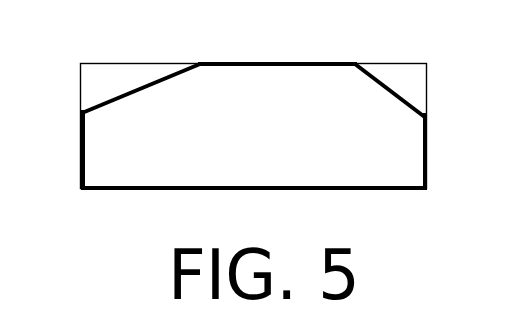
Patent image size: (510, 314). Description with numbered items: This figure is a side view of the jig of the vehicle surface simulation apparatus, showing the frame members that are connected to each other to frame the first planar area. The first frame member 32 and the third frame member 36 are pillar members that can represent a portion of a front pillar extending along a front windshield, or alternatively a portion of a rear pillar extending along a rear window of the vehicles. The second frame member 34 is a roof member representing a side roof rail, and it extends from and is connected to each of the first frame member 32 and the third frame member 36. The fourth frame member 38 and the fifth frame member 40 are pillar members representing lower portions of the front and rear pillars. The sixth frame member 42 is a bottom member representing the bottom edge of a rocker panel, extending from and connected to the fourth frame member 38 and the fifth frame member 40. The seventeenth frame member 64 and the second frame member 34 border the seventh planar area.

The first frame member 32 is at (391, 93).
The second frame member 34 is at (278, 63).
The third frame member 36 is at (143, 93).
The fourth frame member 38 is at (427, 157).
The fifth frame member 40 is at (81, 154).
The sixth frame member 42 is at (253, 187).
The seventeenth frame member 64 is at (396, 63).